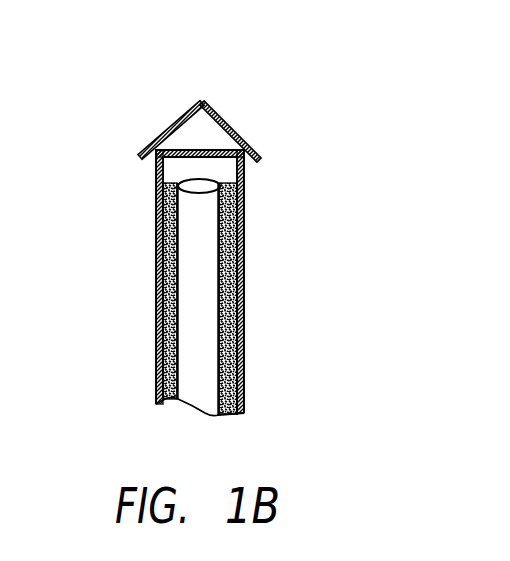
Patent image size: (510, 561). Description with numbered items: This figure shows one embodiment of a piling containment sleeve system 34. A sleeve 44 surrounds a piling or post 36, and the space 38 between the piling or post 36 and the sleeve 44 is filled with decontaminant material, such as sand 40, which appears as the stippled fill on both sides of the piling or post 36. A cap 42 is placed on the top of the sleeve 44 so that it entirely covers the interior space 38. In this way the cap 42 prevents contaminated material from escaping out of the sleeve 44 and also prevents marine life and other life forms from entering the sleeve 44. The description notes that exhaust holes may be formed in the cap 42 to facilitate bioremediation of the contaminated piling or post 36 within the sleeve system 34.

The sleeve system 34 is at (233, 244).
The piling or post 36 is at (203, 318).
The space 38 is at (230, 177).
The sand 40 is at (240, 272).
The cap 42 is at (171, 126).
The sleeve 44 is at (249, 186).